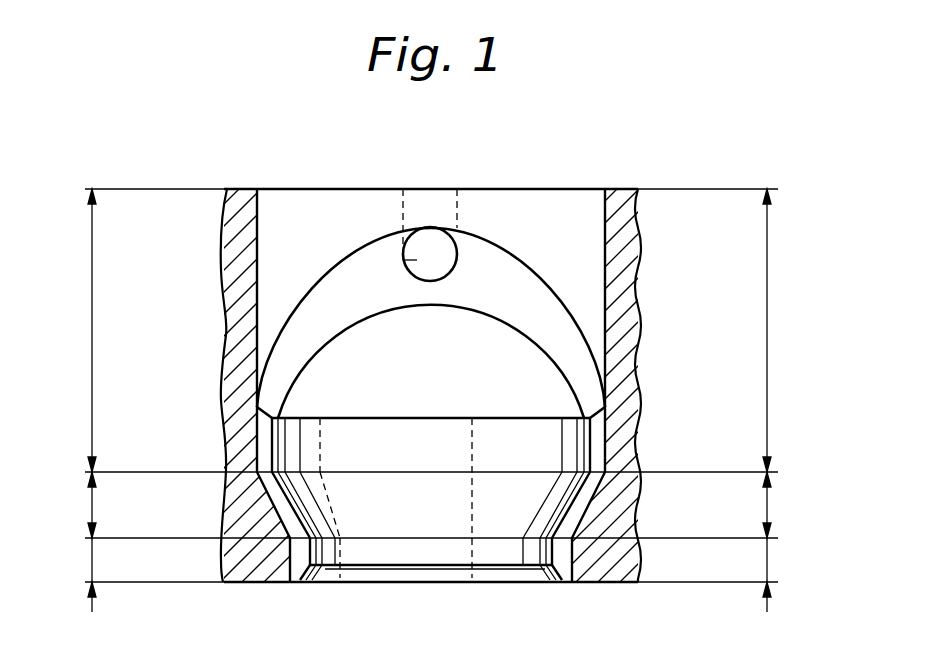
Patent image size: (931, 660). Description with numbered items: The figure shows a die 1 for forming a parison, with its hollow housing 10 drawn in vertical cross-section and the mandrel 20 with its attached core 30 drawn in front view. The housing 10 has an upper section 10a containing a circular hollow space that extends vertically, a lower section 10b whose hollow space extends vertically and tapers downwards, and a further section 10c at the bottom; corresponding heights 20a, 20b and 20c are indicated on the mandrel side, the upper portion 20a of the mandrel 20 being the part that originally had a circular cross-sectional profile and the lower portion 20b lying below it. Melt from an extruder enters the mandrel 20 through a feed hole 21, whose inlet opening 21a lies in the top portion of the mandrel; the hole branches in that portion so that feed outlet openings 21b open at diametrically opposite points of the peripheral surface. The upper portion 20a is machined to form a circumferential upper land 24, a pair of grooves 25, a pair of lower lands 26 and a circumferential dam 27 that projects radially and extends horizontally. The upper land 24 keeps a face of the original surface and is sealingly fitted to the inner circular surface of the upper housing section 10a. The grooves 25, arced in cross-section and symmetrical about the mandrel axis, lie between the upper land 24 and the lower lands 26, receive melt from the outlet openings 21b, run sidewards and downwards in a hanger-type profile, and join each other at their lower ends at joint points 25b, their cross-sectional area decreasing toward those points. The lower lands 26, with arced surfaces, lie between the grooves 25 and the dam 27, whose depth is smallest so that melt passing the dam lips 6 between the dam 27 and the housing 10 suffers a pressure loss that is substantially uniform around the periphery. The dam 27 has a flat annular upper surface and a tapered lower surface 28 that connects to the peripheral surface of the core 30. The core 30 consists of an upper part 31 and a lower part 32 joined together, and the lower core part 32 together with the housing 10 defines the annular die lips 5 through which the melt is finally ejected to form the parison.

The die 1 is at (238, 188).
The die lips 5 is at (288, 583).
The dam lips 6 is at (636, 415).
The housing 10 is at (640, 224).
The upper housing section 10a is at (408, 400).
The lower housing section 10b is at (410, 505).
The die lower portion height 10c is at (138, 574).
The mandrel 20 is at (585, 200).
The upper mandrel portion 20a is at (728, 400).
The lower mandrel portion 20b is at (792, 505).
The die lower portion height 20c is at (728, 571).
The feed hole 21 is at (462, 207).
The inlet opening 21a is at (422, 188).
The feed outlet openings 21b is at (460, 248).
The upper land 24 is at (573, 269).
The grooves 25 is at (333, 287).
The joint points 25b is at (402, 258).
The lower lands 26 is at (530, 383).
The dam 27 is at (567, 445).
The lower surface 28 is at (562, 506).
The core 30 is at (512, 575).
The upper core part 31 is at (428, 580).
The lower core part 32 is at (378, 573).